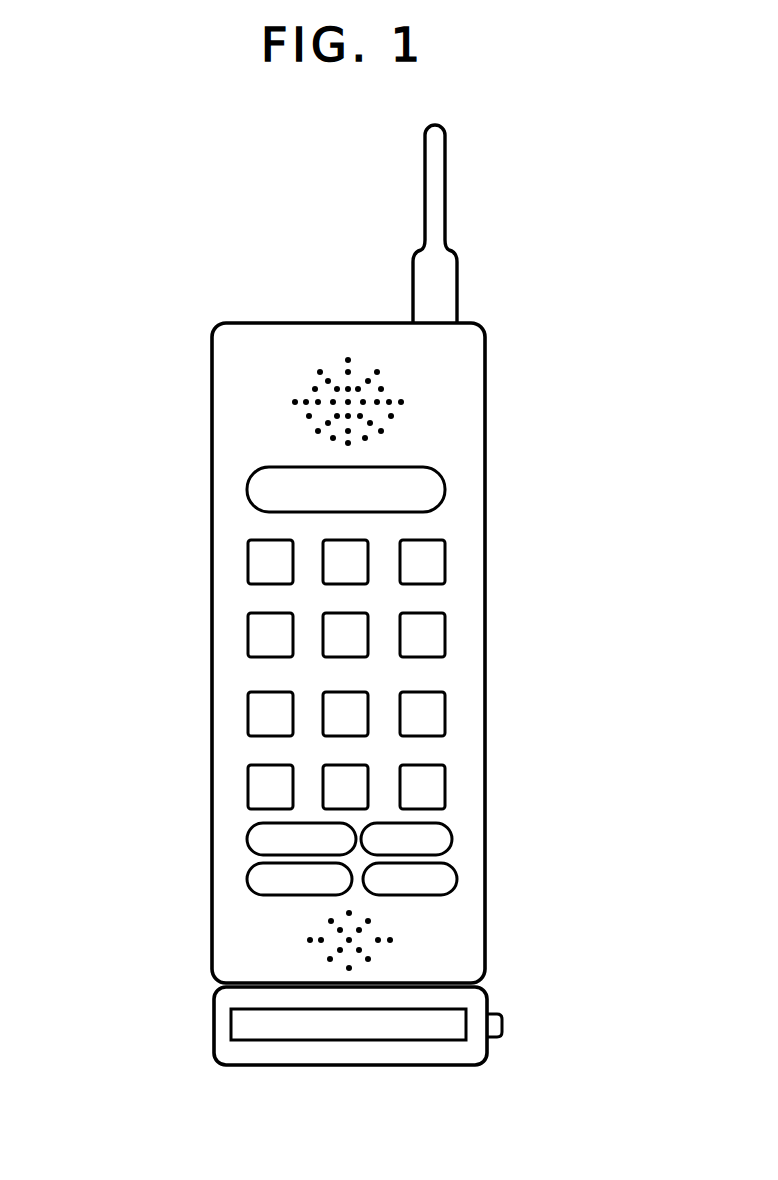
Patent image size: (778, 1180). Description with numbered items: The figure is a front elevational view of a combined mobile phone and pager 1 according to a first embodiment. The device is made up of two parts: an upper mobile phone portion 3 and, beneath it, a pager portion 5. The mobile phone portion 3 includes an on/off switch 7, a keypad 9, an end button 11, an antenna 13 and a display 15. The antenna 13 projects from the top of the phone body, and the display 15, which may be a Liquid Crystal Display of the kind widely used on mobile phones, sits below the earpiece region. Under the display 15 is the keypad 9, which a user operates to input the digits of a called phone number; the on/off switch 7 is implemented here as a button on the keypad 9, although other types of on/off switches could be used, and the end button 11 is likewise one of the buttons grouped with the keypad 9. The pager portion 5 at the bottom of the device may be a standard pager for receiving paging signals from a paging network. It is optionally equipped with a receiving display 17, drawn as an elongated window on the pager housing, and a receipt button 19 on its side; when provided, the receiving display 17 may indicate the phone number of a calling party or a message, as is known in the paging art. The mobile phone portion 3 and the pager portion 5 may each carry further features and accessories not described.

The combined mobile phone and pager 1 is at (114, 406).
The mobile phone portion 3 is at (213, 655).
The pager portion 5 is at (214, 1027).
The on/off switch 7 is at (455, 882).
The keypad 9 is at (543, 528).
The end button 11 is at (450, 838).
The antenna 13 is at (437, 181).
The display 15 is at (432, 483).
The receiving display 17 is at (431, 1027).
The receipt button 19 is at (503, 1025).